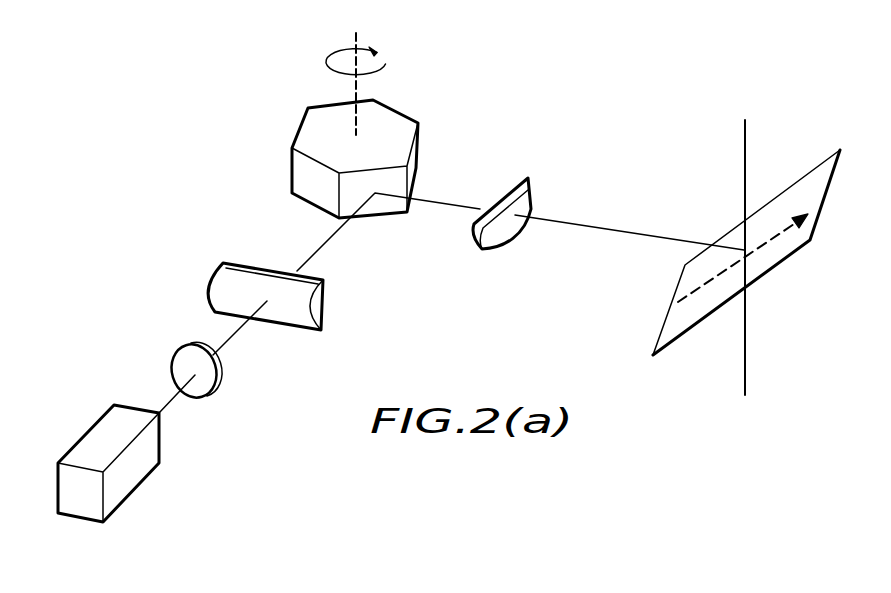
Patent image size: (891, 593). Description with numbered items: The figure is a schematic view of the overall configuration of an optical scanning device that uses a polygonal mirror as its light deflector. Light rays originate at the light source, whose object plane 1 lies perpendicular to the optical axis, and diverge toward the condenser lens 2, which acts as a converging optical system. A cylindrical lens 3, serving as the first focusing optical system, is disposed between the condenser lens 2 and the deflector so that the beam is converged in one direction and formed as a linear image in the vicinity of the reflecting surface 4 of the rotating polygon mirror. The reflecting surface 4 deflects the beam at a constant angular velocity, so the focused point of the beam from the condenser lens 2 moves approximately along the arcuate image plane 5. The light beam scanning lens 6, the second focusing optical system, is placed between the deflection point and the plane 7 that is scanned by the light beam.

The object plane 1 is at (151, 460).
The condenser lens 2 is at (212, 380).
The cylindrical lens 3 is at (327, 307).
The reflecting surface 4 is at (385, 220).
The image plane 5 is at (405, 127).
The light beam scanning lens 6 is at (528, 193).
The scanned plane 7 is at (794, 188).